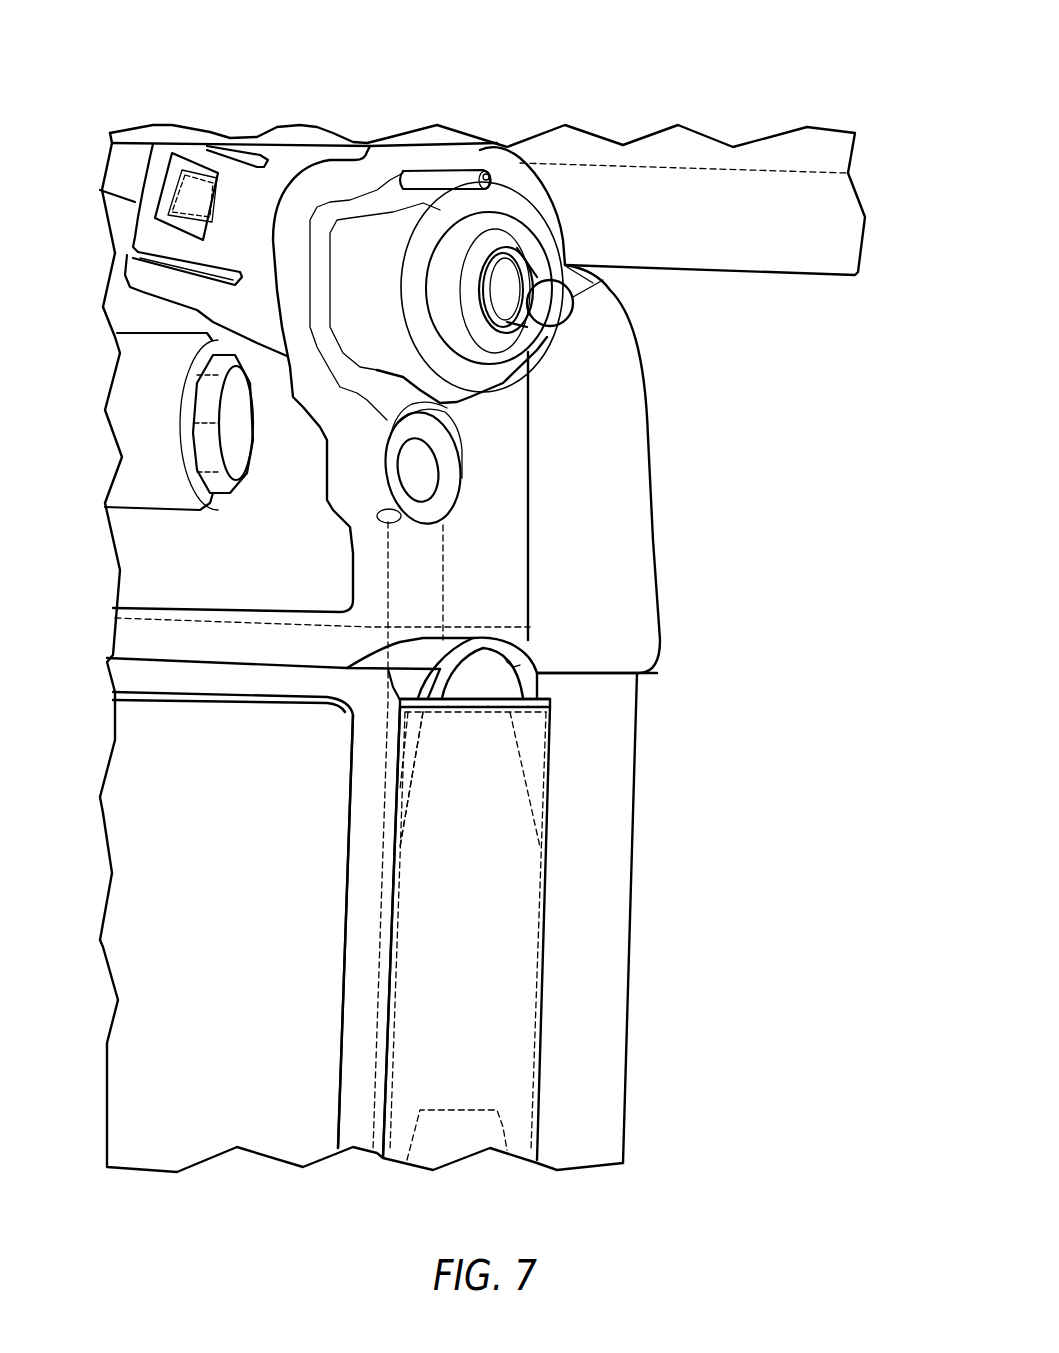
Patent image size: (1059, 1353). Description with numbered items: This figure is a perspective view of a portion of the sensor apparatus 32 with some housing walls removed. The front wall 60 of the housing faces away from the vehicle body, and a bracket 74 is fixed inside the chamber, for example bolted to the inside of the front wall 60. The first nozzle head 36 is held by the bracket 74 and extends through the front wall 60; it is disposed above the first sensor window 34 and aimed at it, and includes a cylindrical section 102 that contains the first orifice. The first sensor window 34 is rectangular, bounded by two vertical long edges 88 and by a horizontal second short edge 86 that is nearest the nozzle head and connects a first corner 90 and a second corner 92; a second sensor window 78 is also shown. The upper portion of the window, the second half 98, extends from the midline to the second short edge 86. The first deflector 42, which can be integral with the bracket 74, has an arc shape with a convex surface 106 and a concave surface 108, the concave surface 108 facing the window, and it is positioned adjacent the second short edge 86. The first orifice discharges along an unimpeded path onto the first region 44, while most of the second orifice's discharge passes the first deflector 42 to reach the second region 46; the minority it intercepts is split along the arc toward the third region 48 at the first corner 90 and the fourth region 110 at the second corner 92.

The sensor apparatus 32 is at (308, 76).
The first sensor window 34 is at (493, 1037).
The first nozzle head 36 is at (563, 313).
The first deflector 42 is at (511, 640).
The first region 44 is at (503, 1130).
The second region 46 is at (547, 918).
The third region 48 is at (393, 735).
The front wall 60 is at (590, 808).
The bracket 74 is at (620, 493).
The second sensor window 78 is at (197, 1080).
The second short edge 86 is at (458, 708).
The long edges 88 is at (393, 968).
The first corner 90 is at (398, 700).
The second corner 92 is at (553, 707).
The second half 98 is at (437, 882).
The cylindrical section 102 is at (533, 281).
The convex surface 106 is at (443, 698).
The concave surface 108 is at (527, 662).
The fourth region 110 is at (550, 743).